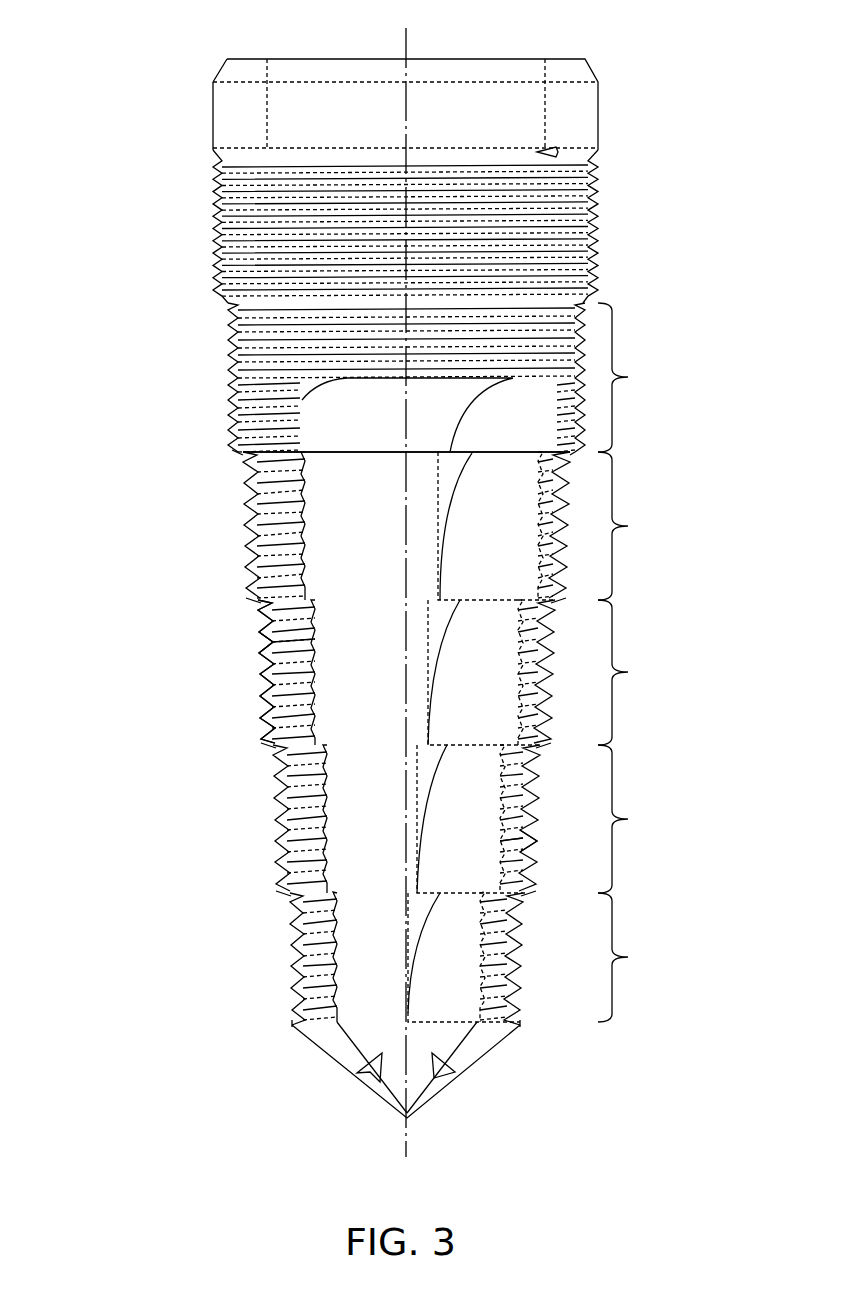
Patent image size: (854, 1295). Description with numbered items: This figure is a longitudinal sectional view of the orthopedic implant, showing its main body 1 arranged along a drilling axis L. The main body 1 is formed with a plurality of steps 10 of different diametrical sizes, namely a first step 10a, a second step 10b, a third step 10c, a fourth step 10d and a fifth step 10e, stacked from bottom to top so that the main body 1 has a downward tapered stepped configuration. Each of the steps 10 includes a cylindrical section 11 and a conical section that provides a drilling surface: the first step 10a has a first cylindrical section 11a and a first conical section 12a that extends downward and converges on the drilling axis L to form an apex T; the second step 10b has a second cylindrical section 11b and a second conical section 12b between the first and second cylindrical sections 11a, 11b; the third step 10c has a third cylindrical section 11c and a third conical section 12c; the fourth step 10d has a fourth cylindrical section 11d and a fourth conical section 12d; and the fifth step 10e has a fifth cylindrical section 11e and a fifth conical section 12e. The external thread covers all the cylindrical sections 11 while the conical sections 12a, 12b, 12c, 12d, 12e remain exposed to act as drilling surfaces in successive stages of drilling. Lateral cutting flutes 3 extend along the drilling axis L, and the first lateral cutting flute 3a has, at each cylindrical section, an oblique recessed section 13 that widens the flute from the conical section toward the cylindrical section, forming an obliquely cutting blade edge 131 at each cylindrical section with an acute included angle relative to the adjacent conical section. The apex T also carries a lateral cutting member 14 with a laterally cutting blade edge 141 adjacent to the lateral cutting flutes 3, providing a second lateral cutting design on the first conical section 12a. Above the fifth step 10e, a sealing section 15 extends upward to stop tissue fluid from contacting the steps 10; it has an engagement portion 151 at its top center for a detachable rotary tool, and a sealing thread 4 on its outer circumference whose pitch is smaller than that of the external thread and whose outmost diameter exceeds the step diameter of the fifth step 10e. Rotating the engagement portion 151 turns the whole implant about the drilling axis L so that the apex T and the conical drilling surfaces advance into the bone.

The main body 1 is at (252, 44).
The drilling axis L is at (404, 580).
The apex T is at (408, 1118).
The sealing section 15 is at (426, 108).
The engagement portion 151 is at (267, 107).
The sealing thread 4 is at (213, 235).
The steps 10 is at (395, 679).
The first step 10a is at (425, 974).
The second step 10b is at (419, 821).
The third step 10c is at (410, 675).
The fourth step 10d is at (403, 527).
The fifth step 10e is at (395, 379).
The cylindrical section 11 is at (266, 671).
The first cylindrical section 11a is at (290, 981).
The second cylindrical section 11b is at (273, 831).
The third cylindrical section 11c is at (258, 683).
The fourth cylindrical section 11d is at (243, 537).
The fifth cylindrical section 11e is at (228, 388).
The first conical section 12a is at (320, 1055).
The second conical section 12b is at (283, 897).
The third conical section 12c is at (272, 748).
The fourth conical section 12d is at (258, 602).
The fifth conical section 12e is at (240, 452).
The lateral cutting flutes 3 is at (235, 638).
The first lateral cutting flute 3a is at (268, 636).
The oblique recessed section 13 is at (473, 917).
The obliquely cutting blade edge 131 is at (492, 852).
The lateral cutting member 14 is at (368, 1070).
The laterally cutting blade edge 141 is at (470, 1065).